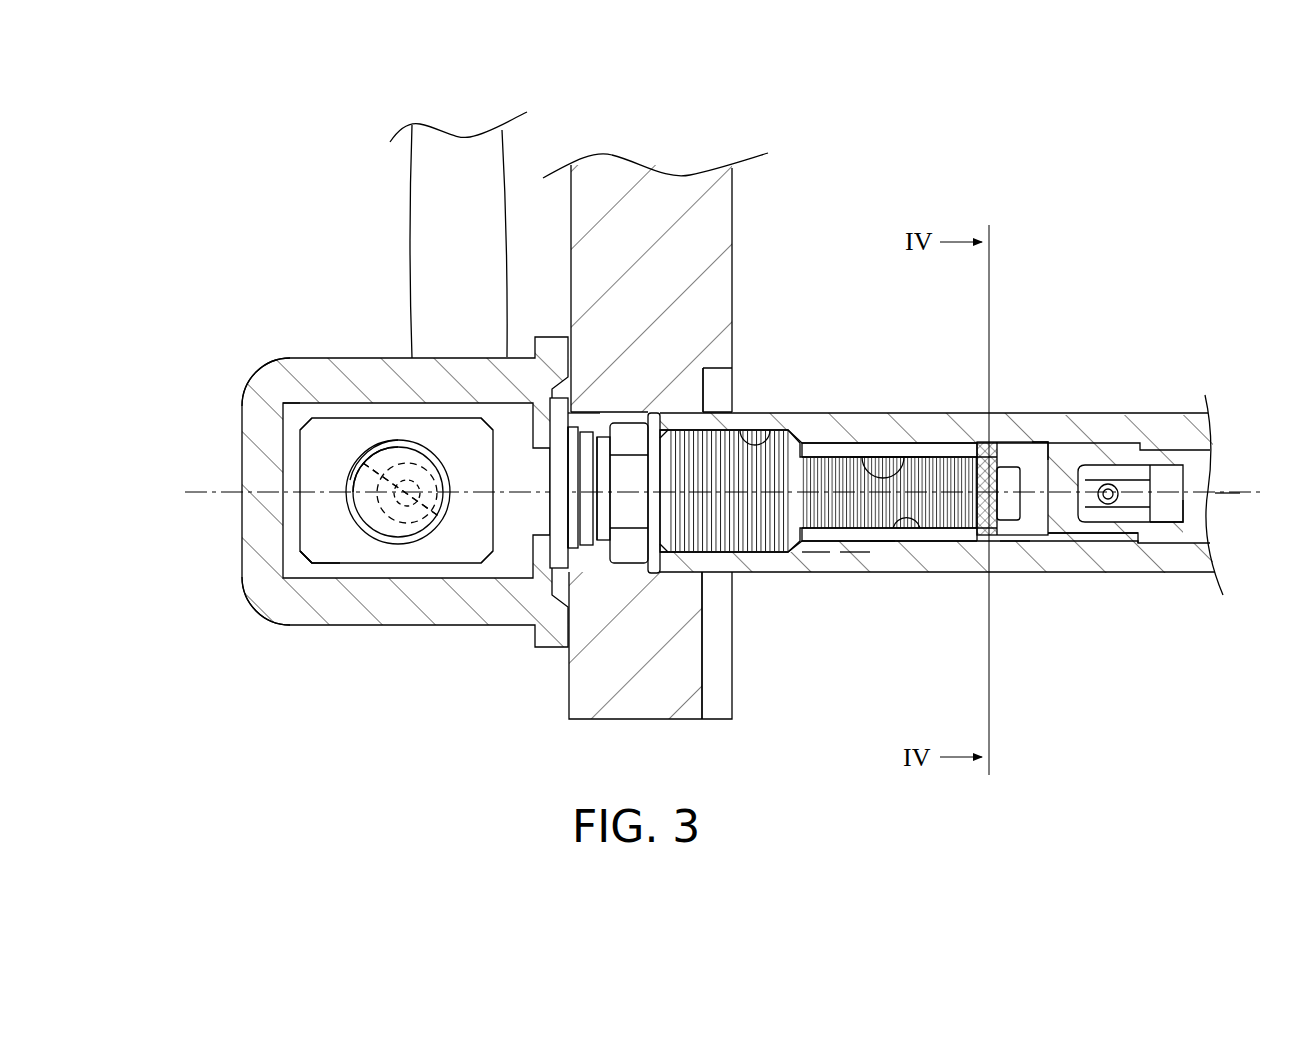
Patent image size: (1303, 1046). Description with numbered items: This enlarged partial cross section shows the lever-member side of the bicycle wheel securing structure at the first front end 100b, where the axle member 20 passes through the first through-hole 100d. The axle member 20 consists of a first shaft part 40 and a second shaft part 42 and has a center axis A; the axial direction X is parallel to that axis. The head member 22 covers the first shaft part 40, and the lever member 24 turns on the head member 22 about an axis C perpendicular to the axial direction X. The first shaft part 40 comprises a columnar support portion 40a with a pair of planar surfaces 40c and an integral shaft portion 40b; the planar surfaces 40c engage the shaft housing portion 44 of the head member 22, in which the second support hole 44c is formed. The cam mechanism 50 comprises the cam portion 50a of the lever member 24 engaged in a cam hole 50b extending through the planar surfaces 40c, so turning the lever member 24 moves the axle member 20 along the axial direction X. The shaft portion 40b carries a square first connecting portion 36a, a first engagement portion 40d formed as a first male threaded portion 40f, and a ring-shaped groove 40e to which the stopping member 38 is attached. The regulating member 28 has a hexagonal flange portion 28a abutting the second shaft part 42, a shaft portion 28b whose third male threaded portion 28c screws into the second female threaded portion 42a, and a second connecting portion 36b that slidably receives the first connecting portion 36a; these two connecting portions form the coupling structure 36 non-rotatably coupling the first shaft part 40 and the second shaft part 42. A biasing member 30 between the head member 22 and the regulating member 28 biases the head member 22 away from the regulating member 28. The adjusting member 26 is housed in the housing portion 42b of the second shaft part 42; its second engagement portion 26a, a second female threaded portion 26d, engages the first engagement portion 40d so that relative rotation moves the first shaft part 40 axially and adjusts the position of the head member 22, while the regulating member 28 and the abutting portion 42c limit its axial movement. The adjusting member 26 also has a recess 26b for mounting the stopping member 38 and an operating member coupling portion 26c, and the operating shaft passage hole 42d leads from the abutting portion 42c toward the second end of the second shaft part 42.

The axle member 20 is at (871, 240).
The head member 22 is at (313, 338).
The lever member 24 is at (398, 210).
The adjusting member 26 is at (1048, 452).
The second engagement portion 26a is at (980, 562).
The recess 26b is at (1040, 455).
The operating member coupling portion 26c is at (1107, 562).
The second female threaded portion 26d is at (913, 562).
The regulating member 28 is at (724, 568).
The flange portion 28a is at (548, 565).
The shaft portion 28b is at (699, 568).
The third male threaded portion 28c is at (768, 565).
The biasing member 30 is at (628, 562).
The coupling structure 36 is at (563, 722).
The first connecting portion 36a is at (555, 572).
The second connecting portion 36b is at (574, 560).
The stopping member 38 is at (995, 442).
The first shaft part 40 is at (572, 363).
The support portion 40a is at (262, 602).
The shaft portion 40b is at (815, 562).
The planar surfaces 40c is at (356, 554).
The first engagement portion 40d is at (855, 562).
The ring-shaped groove 40e is at (1015, 562).
The first male threaded portion 40f is at (880, 562).
The second shaft part 42 is at (829, 400).
The second female threaded portion 42a is at (770, 404).
The housing portion 42b is at (908, 440).
The abutting portion 42c is at (1128, 436).
The operating shaft passage hole 42d is at (1207, 565).
The shaft housing portion 44 is at (262, 385).
The second support hole 44c is at (520, 560).
The cam mechanism 50 is at (347, 408).
The cam portion 50a is at (376, 437).
The cam hole 50b is at (345, 497).
The first front end 100b is at (701, 156).
The first through-hole 100d is at (598, 719).
The axial direction X is at (725, 476).
The axis C is at (292, 576).
The center axis A is at (1215, 493).